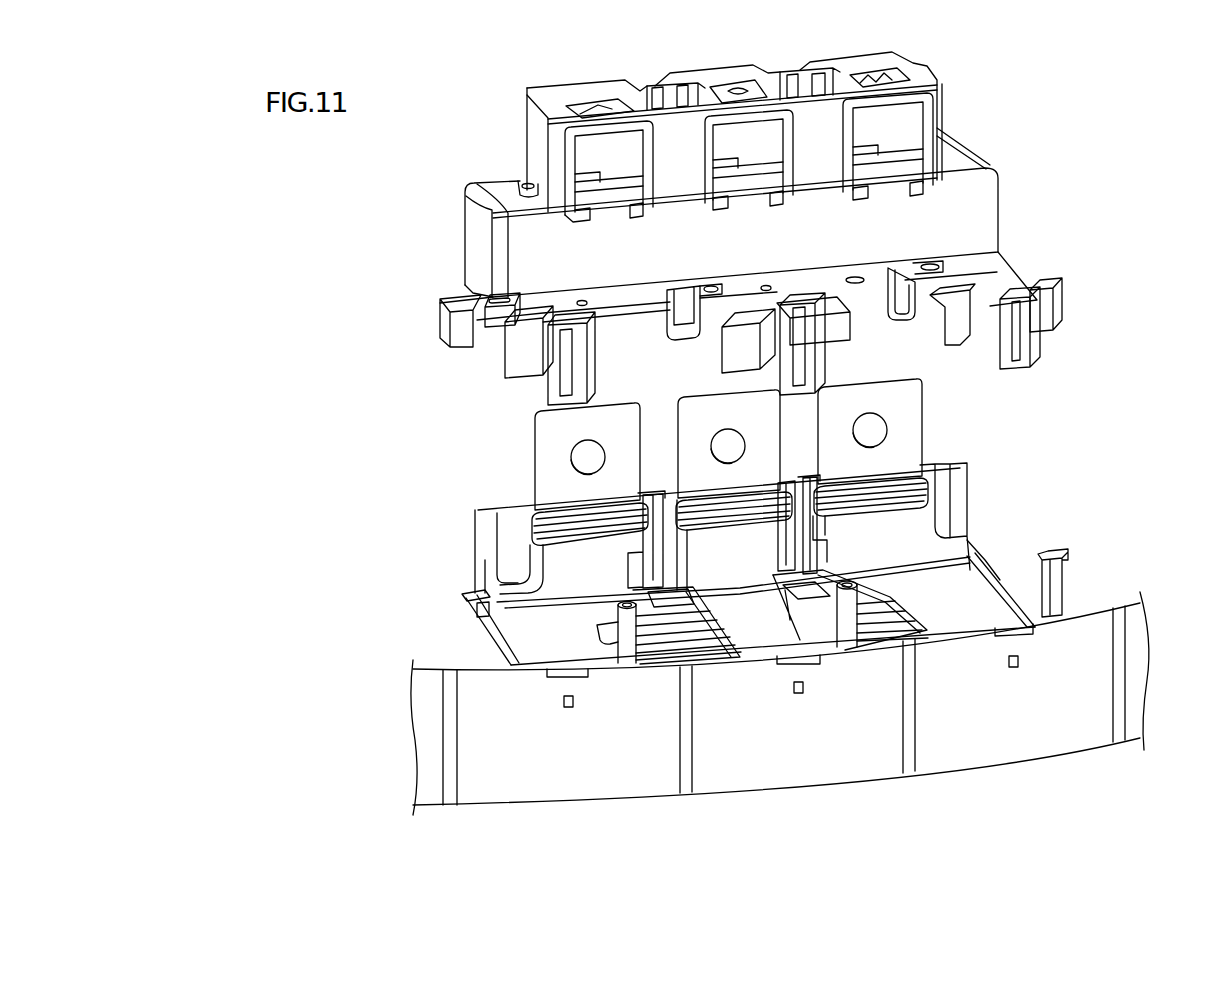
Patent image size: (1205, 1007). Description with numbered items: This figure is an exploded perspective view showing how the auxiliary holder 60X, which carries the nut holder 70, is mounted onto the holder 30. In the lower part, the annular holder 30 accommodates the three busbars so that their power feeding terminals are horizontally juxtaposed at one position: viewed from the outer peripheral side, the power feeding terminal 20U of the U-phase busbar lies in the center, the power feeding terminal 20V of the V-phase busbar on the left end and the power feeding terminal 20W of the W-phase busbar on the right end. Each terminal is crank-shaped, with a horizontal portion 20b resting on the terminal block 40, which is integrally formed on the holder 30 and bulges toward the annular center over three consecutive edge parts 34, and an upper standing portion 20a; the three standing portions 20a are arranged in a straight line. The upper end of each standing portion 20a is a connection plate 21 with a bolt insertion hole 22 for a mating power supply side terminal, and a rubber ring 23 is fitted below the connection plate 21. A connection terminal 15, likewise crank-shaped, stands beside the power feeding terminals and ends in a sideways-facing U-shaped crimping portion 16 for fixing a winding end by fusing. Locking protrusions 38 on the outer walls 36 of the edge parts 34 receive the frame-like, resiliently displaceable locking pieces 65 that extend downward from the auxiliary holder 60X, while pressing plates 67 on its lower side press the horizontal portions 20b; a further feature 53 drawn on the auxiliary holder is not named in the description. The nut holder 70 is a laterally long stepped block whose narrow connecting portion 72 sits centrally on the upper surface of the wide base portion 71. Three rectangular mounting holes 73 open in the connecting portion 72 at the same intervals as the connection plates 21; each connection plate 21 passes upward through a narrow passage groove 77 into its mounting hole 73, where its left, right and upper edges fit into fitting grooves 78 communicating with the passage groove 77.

The connection terminal 15 is at (1058, 590).
The crimping portion 16 is at (1060, 556).
The power feeding terminal of the U-phase busbar 20U is at (676, 450).
The power feeding terminal of the V-phase busbar 20V is at (535, 462).
The power feeding terminal of the W-phase busbar 20W is at (923, 447).
The upper standing portion 20a is at (537, 557).
The horizontal portion 20b is at (980, 597).
The connection plate 21 is at (535, 437).
The bolt insertion hole 22 is at (588, 457).
The rubber ring 23 is at (580, 520).
The holder 30 is at (1090, 757).
The edge part 34 is at (640, 780).
The outer wall 36 is at (770, 772).
The locking protrusion 38 is at (569, 707).
The terminal block 40 is at (463, 600).
The engagement clip 53 is at (517, 307).
The auxiliary holder 60X is at (1005, 262).
The locking piece 65 is at (1027, 335).
The pressing plate 67 is at (1040, 303).
The nut holder 70 is at (998, 190).
The base portion 71 is at (463, 240).
The connecting portion 72 is at (530, 127).
The mounting hole 73 is at (632, 150).
The passage groove 77 is at (520, 190).
The fitting groove 78 is at (757, 148).